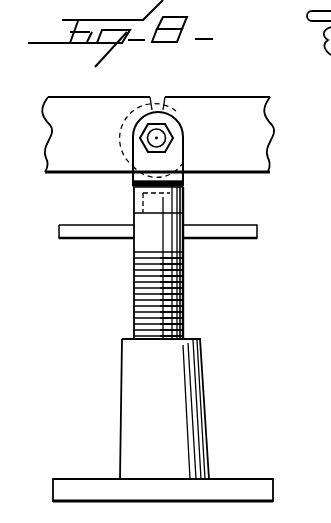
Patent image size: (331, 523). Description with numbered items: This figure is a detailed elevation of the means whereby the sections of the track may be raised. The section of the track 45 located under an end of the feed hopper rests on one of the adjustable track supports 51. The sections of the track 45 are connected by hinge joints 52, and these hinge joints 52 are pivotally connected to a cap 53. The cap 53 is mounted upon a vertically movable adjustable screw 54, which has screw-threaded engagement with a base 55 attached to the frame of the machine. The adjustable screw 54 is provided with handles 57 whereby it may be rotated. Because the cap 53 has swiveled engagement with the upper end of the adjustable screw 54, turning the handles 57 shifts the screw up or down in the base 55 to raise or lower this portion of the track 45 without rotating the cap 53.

The track 45 is at (235, 141).
The adjustable track supports 51 is at (128, 324).
The hinge joints 52 is at (177, 114).
The cap 53 is at (184, 178).
The adjustable screw 54 is at (188, 300).
The base 55 is at (183, 421).
The handles 57 is at (116, 239).